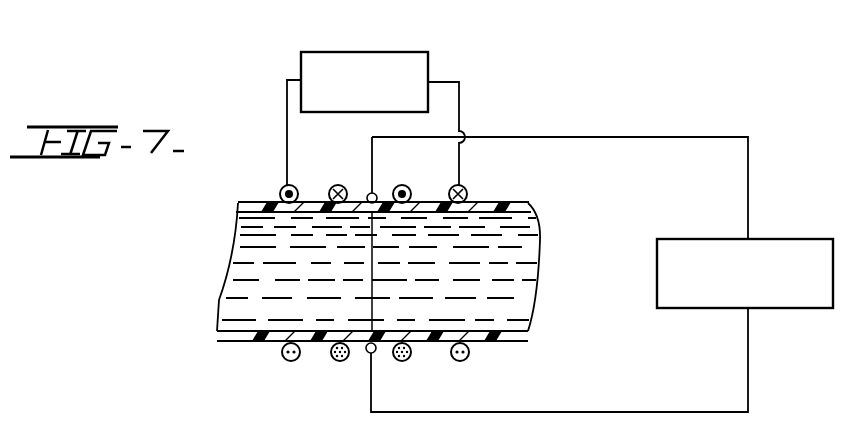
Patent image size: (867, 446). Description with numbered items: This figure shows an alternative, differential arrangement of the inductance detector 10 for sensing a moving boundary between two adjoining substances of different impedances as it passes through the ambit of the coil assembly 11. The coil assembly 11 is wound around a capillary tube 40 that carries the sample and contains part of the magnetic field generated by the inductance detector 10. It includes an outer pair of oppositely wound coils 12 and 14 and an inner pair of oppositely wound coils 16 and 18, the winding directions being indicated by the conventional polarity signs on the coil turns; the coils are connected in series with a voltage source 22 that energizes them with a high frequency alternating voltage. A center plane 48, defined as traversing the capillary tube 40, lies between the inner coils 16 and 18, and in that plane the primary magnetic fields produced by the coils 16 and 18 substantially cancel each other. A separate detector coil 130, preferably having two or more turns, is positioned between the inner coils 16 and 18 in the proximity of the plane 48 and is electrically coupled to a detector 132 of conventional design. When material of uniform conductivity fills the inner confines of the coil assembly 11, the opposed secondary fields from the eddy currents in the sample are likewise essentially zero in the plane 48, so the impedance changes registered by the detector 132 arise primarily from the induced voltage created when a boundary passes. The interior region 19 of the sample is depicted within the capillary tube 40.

The inductance detector 10 is at (545, 227).
The coil assembly 11 is at (315, 357).
The outer coil 12 is at (285, 186).
The outer coil 14 is at (460, 185).
The inner coil 16 is at (337, 185).
The inner coil 18 is at (402, 185).
The interior region of body 19 is at (415, 313).
The voltage source 22 is at (376, 52).
The capillary tube 40 is at (518, 204).
The center plane 48 is at (372, 273).
The detector coil 130 is at (373, 355).
The detector 132 is at (800, 239).